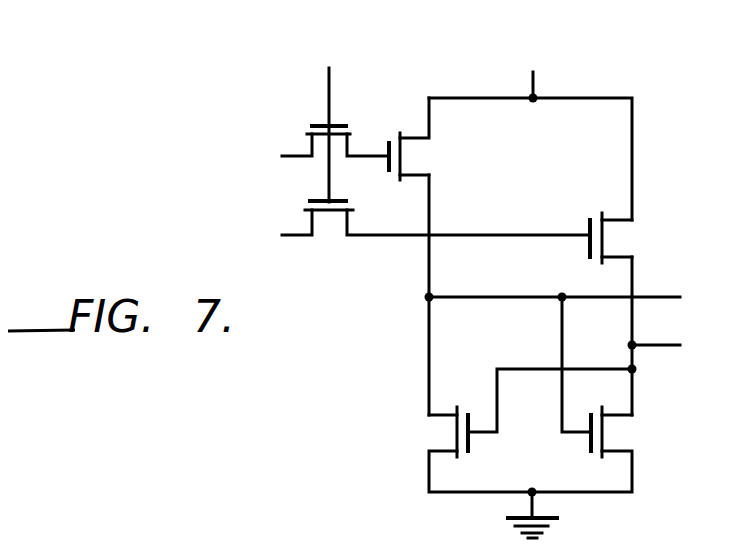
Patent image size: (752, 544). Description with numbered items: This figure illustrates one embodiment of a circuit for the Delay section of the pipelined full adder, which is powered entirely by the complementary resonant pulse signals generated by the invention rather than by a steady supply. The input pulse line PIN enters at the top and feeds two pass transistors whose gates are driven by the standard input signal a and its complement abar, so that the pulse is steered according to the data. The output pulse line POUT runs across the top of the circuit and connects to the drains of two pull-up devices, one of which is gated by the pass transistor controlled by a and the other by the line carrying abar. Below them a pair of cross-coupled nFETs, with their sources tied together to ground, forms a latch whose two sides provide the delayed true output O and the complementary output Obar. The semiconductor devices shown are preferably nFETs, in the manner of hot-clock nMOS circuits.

The input pulse signal PIN is at (329, 124).
The output pulse signal POUT is at (530, 128).
The input signal a is at (321, 152).
The complementary input signal a-bar abar is at (272, 220).
The output signal O is at (563, 359).
The complementary output signal Obar is at (702, 331).